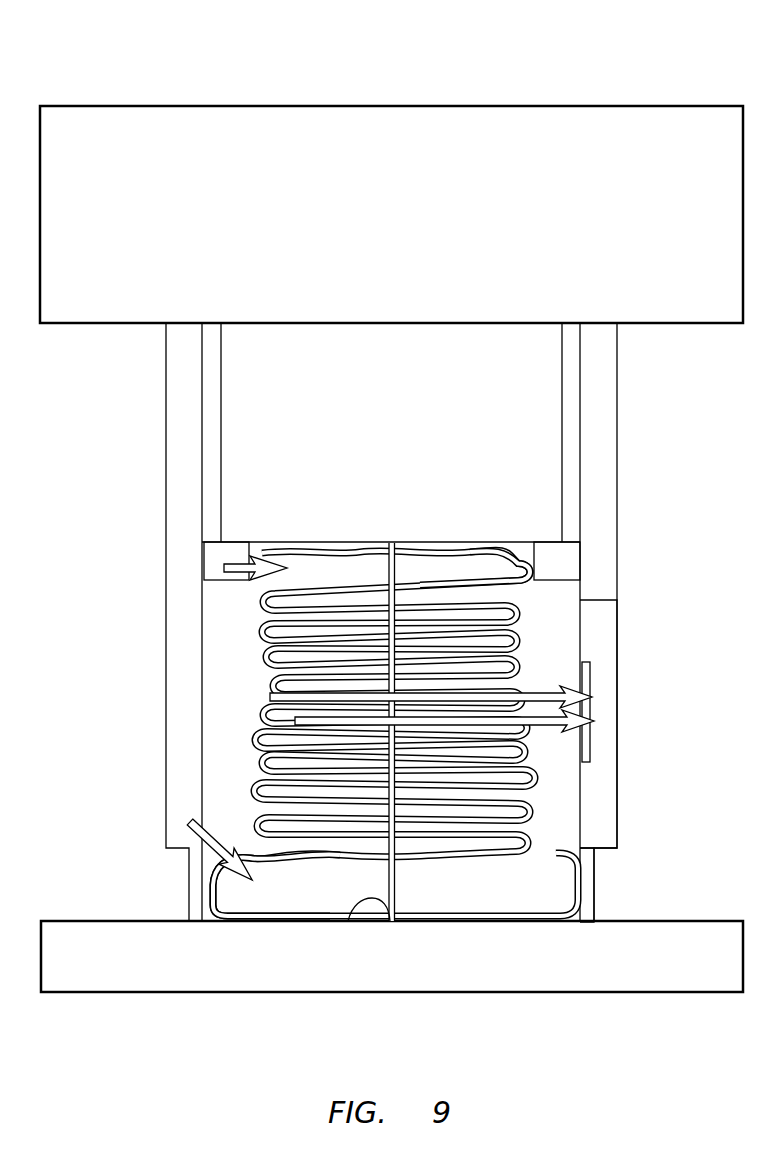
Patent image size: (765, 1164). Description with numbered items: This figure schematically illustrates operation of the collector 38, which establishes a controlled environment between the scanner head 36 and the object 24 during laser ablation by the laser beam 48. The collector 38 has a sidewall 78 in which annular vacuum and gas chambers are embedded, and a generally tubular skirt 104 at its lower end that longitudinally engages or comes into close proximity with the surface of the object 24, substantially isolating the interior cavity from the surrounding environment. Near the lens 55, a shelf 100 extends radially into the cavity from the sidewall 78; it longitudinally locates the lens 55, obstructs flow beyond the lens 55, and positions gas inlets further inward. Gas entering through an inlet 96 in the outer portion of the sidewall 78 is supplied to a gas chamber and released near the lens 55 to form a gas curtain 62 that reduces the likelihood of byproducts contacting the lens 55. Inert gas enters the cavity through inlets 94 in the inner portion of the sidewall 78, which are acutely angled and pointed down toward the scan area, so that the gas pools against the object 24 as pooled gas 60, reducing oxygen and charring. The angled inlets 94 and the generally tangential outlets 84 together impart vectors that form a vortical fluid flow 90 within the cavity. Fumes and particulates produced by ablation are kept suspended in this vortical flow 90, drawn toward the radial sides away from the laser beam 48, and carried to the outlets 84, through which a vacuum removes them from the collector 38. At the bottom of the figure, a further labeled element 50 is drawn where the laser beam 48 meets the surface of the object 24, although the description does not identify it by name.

The scanner head 36 is at (641, 105).
The object 24 is at (693, 995).
The collector 38 is at (618, 507).
The lens 55 is at (562, 428).
The sidewall 78 is at (617, 655).
The skirt 104 is at (595, 892).
The shelf 100 is at (568, 540).
The vortical fluid flow 90 is at (258, 645).
The gas curtain 62 is at (515, 575).
The pooled gas 60 is at (233, 898).
The laser beam 48 is at (396, 882).
The rod tip 50 is at (348, 921).
The inlet 96 is at (228, 566).
The outlets 84 is at (590, 740).
The inlets 94 is at (190, 822).